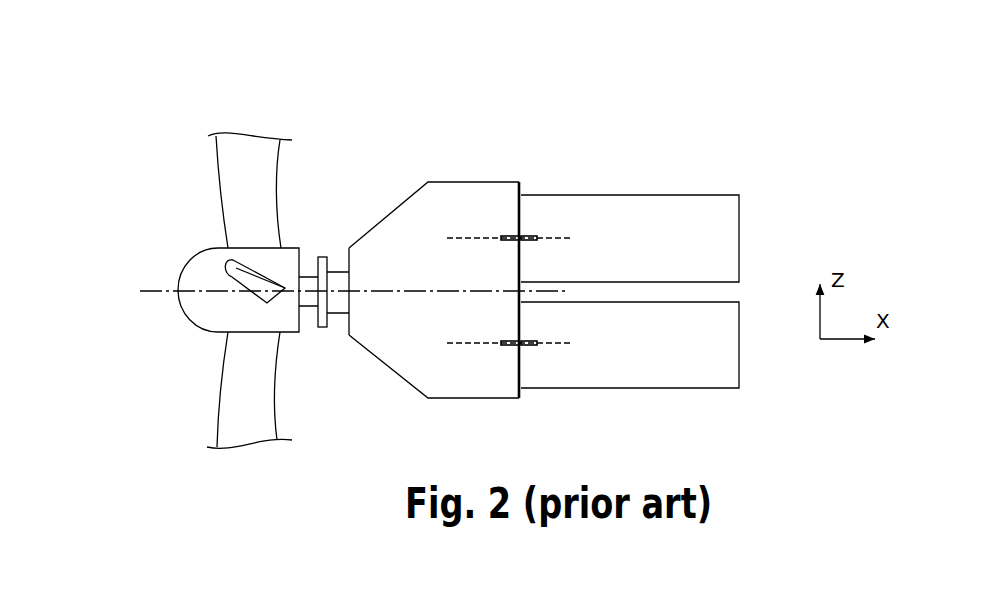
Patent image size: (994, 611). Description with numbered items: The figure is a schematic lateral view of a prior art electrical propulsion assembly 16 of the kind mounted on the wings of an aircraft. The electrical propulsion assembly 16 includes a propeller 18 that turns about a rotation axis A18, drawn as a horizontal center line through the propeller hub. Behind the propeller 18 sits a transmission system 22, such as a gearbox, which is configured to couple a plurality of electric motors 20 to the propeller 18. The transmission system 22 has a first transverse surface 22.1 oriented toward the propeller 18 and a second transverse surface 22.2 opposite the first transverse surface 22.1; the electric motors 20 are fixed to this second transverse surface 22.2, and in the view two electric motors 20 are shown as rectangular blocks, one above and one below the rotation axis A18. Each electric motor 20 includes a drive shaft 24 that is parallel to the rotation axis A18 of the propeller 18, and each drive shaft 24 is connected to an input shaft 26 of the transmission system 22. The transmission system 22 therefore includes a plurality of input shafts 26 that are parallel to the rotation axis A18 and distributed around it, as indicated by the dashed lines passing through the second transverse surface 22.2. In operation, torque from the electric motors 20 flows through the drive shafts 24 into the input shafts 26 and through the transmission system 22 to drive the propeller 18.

The electrical propulsion assembly 16 is at (206, 257).
The propeller 18 is at (200, 192).
The rotation axis A18 is at (160, 291).
The electric motor 20 is at (630, 207).
The transmission system 22 is at (423, 292).
The first transverse surface 22.1 is at (348, 262).
The second transverse surface 22.2 is at (520, 210).
The drive shaft 24 is at (532, 232).
The input shaft 26 is at (510, 233).